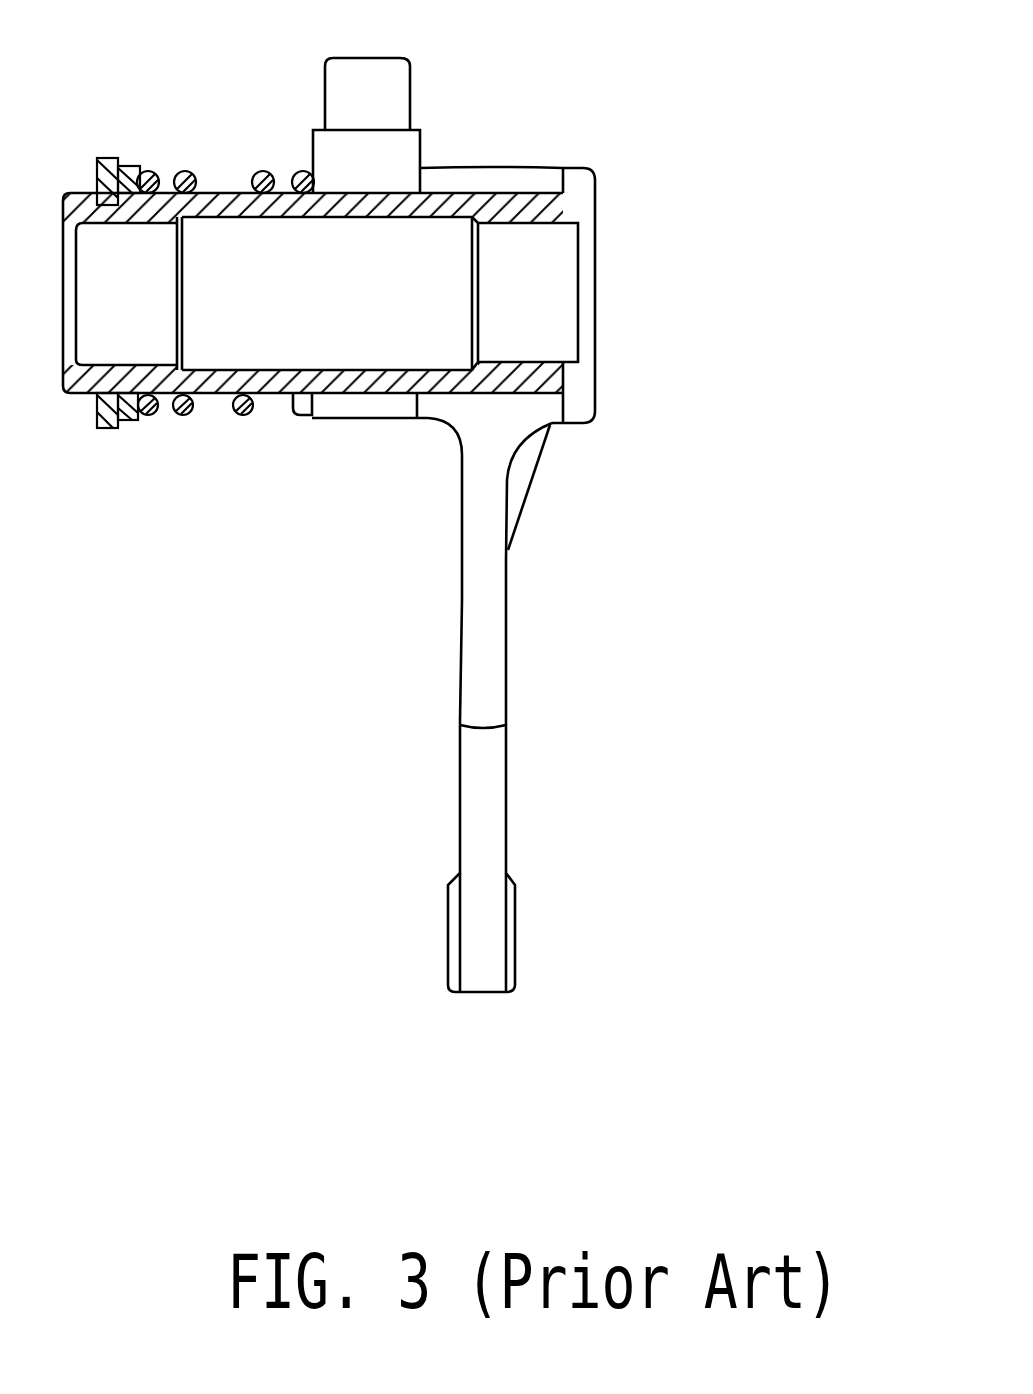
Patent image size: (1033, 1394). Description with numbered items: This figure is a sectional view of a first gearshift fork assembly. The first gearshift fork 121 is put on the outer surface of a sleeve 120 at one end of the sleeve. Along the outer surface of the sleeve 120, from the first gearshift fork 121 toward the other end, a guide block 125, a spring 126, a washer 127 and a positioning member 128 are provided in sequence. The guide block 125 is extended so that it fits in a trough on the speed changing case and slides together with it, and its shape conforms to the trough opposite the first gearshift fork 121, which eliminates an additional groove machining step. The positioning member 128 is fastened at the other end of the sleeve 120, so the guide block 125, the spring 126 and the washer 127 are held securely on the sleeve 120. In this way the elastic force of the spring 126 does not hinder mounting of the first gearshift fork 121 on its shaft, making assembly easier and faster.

The sleeve 120 is at (513, 380).
The first gearshift fork 121 is at (480, 830).
The guide block 125 is at (390, 165).
The spring 126 is at (270, 168).
The washer 127 is at (128, 163).
The positioning member 128 is at (98, 157).